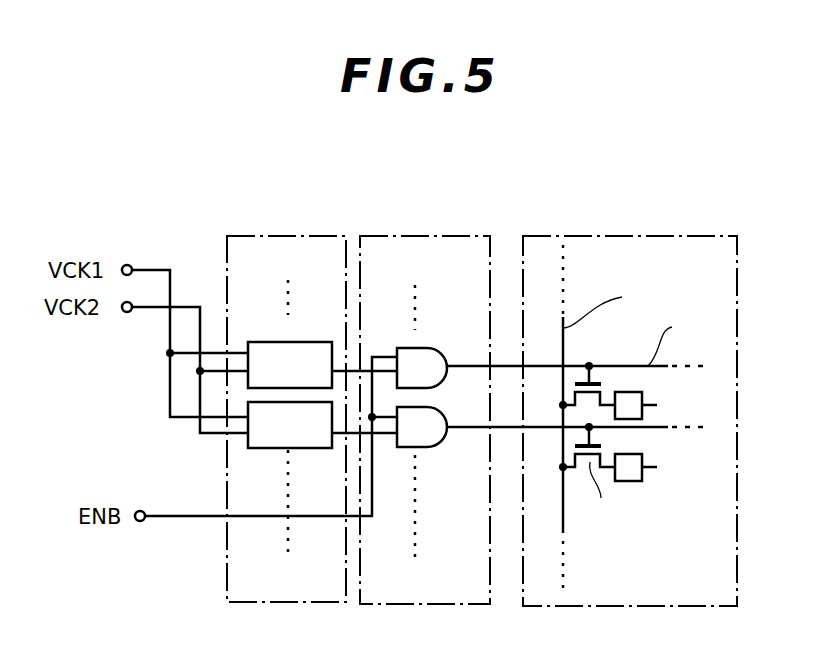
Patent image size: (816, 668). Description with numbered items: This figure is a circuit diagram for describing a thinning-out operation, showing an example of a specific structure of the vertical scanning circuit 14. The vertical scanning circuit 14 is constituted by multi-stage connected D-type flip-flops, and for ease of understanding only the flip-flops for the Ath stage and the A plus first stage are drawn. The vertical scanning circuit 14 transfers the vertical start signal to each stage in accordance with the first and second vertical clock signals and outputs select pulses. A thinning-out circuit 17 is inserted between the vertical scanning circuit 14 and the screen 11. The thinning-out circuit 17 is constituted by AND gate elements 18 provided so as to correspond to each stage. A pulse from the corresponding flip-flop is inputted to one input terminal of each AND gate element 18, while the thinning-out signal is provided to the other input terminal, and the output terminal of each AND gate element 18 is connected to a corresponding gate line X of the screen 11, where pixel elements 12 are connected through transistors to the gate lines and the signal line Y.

The screen 11 is at (630, 380).
The pixel (liquid crystal cell) 12 is at (657, 405).
The vertical scanning circuit 14 is at (279, 236).
The thinning-out circuit 17 is at (514, 376).
The AND gate element 18 is at (437, 450).